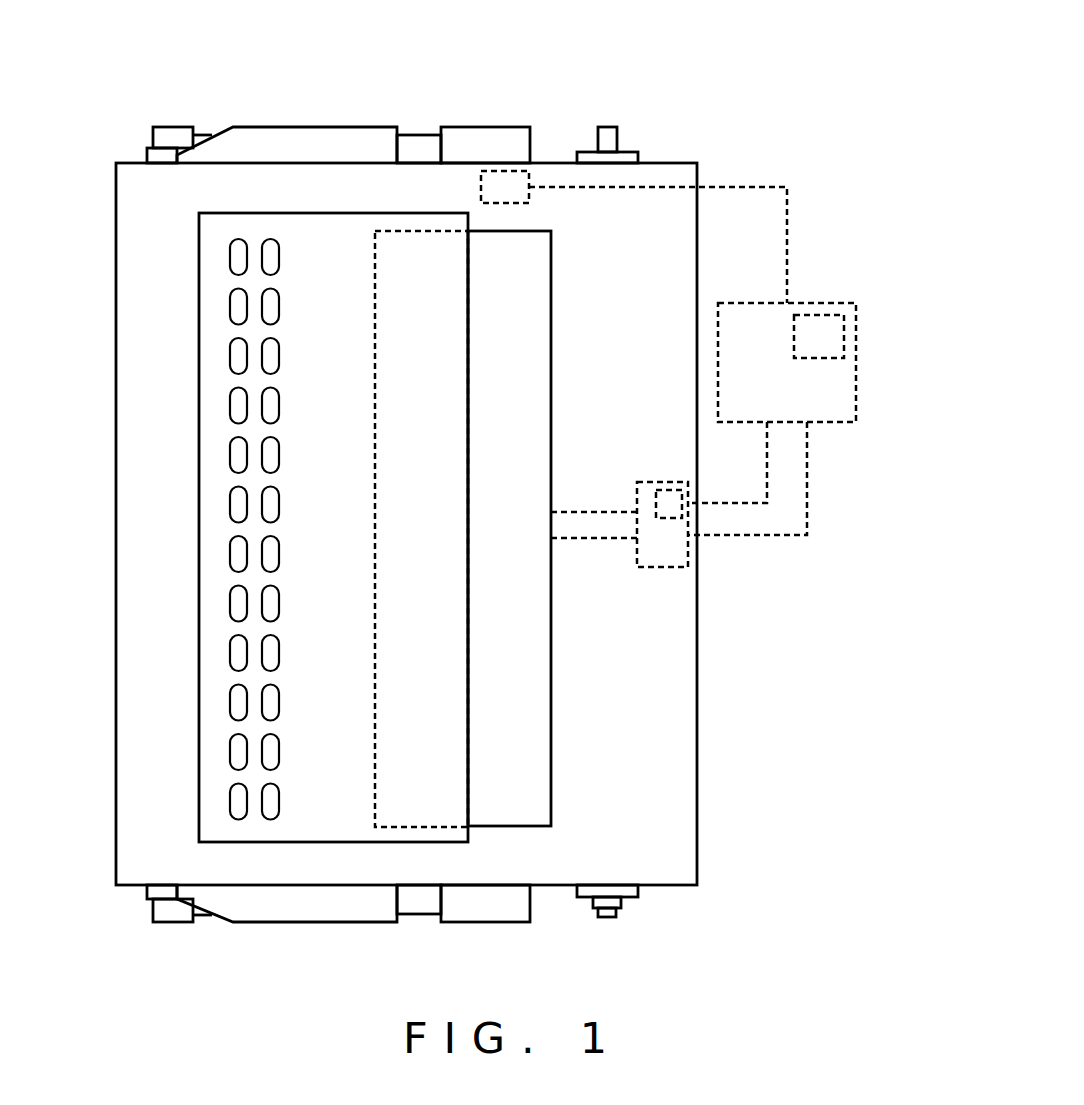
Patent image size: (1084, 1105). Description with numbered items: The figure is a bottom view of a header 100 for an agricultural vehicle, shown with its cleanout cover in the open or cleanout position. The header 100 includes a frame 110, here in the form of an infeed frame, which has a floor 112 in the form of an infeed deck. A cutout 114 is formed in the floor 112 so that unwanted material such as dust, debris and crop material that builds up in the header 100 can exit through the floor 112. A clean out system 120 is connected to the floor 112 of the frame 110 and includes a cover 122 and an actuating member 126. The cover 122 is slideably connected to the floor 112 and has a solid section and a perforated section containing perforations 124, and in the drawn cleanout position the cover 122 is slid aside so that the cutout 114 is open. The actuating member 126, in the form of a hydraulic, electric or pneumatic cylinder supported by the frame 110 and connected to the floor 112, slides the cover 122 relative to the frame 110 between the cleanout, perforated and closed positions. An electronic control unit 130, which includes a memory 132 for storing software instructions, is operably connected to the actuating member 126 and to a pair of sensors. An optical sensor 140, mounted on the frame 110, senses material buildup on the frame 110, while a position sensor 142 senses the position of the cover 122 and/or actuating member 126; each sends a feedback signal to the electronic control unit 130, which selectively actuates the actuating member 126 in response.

The header 100 is at (655, 92).
The frame 110 is at (697, 830).
The floor 112 is at (659, 730).
The cutout 114 is at (540, 645).
The clean out system 120 is at (390, 202).
The cover 122 is at (318, 842).
The perforations 124 is at (262, 612).
The actuating member 126 is at (670, 567).
The electronic control unit 130 is at (856, 405).
The memory 132 is at (844, 333).
The optical sensor 140 is at (501, 171).
The position sensor 142 is at (668, 490).